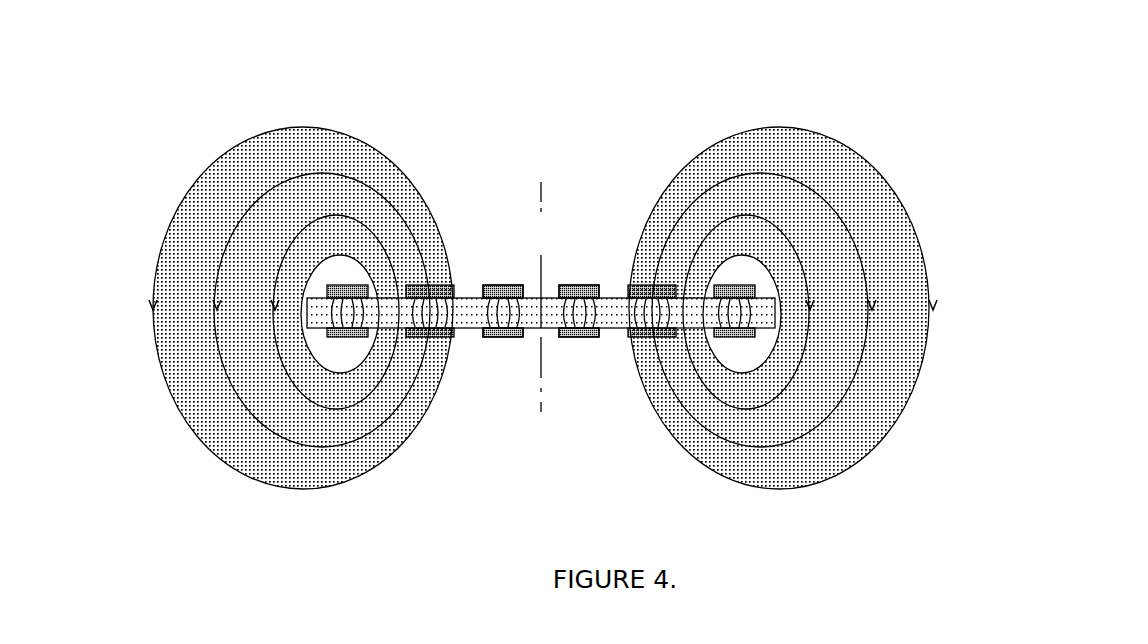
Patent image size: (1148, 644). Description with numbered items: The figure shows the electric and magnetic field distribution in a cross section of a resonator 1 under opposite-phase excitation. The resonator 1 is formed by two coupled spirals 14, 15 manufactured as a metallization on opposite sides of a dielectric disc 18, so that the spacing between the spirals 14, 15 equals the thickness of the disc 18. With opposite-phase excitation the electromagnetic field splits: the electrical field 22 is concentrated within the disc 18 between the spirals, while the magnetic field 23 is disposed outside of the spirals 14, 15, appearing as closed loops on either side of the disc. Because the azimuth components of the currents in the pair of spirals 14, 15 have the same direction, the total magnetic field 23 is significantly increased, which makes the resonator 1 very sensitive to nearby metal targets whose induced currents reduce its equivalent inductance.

The resonator 1 is at (534, 150).
The spiral 14 is at (517, 338).
The spiral 15 is at (573, 285).
The dielectric disc 18 is at (612, 338).
The electrical field 22 is at (513, 320).
The magnetic field 23 is at (770, 418).